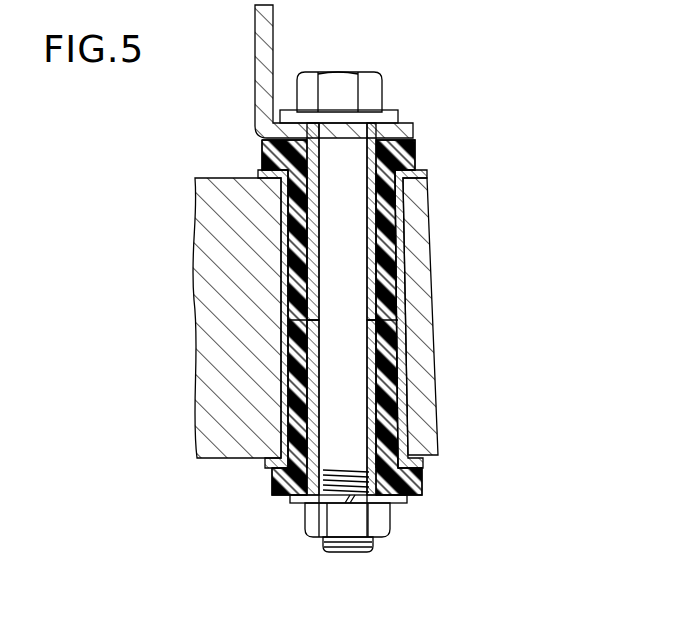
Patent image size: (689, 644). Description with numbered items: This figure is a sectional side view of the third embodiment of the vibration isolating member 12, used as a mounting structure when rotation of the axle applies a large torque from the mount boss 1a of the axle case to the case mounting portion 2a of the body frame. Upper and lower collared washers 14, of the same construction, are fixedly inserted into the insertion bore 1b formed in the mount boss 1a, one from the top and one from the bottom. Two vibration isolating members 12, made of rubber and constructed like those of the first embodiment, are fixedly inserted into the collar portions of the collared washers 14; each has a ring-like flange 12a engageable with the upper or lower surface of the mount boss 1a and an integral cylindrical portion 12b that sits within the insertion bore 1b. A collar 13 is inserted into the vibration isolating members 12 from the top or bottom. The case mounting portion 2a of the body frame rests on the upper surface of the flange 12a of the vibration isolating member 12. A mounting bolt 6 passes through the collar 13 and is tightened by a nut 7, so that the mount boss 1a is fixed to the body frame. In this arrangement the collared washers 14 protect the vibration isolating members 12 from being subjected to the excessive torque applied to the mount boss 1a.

The case mounting portion 2a is at (415, 132).
The mounting bolt 6 is at (380, 88).
The nut 7 is at (388, 518).
The vibration isolating member 12 is at (488, 265).
The flange 12a is at (417, 148).
The cylindrical portion 12b is at (388, 229).
The collar 13 is at (368, 215).
The collared washer 14 is at (420, 169).
The mount boss 1a is at (432, 283).
The insertion bore 1b is at (407, 350).